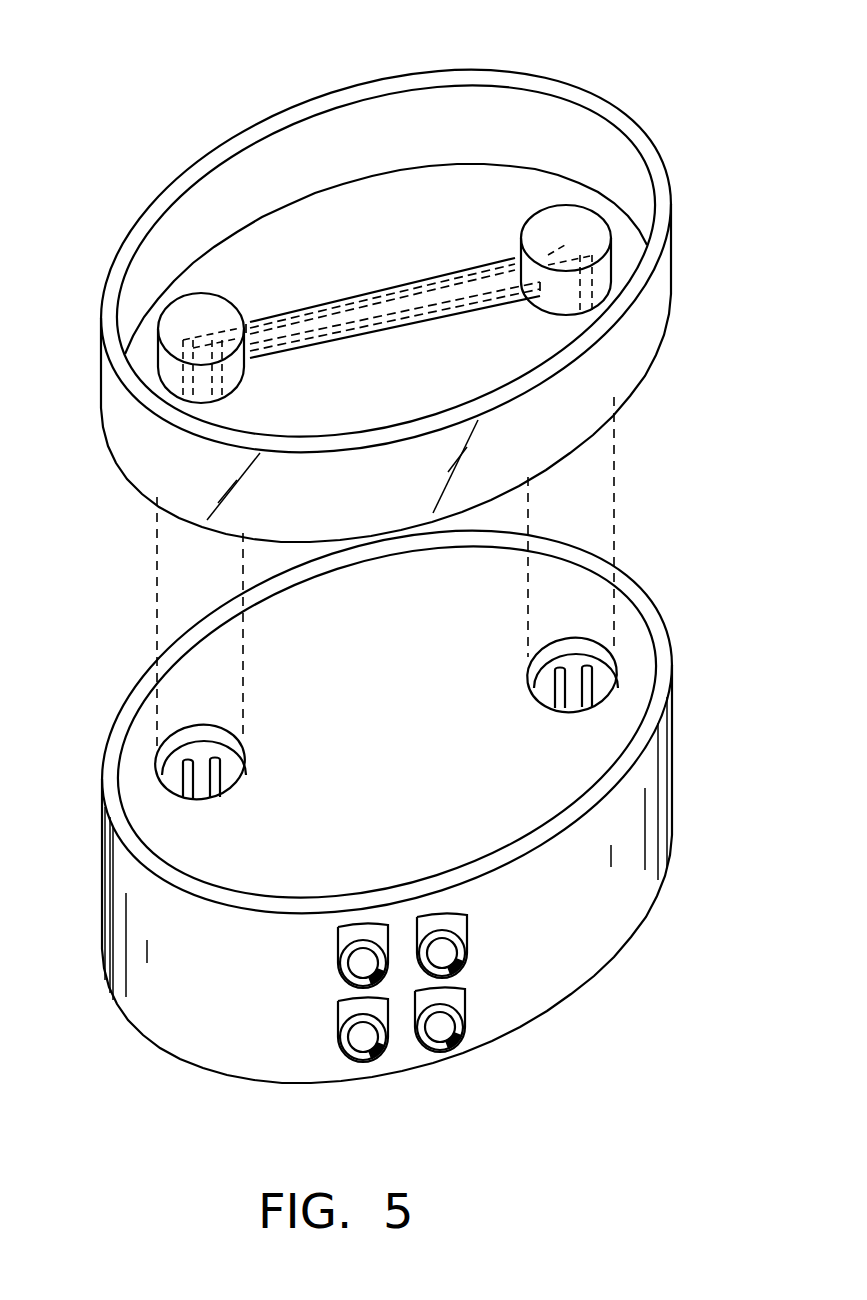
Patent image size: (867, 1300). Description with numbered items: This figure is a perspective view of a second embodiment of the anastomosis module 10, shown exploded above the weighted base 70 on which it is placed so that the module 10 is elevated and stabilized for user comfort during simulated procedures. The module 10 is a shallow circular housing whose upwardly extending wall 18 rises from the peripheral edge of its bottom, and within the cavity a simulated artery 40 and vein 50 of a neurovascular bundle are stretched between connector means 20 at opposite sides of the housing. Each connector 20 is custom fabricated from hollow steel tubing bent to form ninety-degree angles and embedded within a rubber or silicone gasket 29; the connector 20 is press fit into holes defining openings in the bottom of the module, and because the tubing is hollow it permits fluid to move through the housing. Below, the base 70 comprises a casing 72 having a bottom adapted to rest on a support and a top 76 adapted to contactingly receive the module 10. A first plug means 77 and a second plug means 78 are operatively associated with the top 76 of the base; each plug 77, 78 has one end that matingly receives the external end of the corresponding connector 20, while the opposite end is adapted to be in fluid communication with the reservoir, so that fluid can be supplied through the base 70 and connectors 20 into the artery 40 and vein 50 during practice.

The module 10 is at (397, 52).
The upwardly extending wall 18 is at (113, 298).
The connector means 20 is at (557, 267).
The gasket 29 is at (604, 230).
The artery 40 is at (388, 296).
The vein 50 is at (372, 335).
The weighted base 70 is at (352, 1092).
The casing 72 is at (177, 1007).
The top 76 is at (420, 738).
The first plug means 77 is at (605, 677).
The second plug means 78 is at (160, 763).